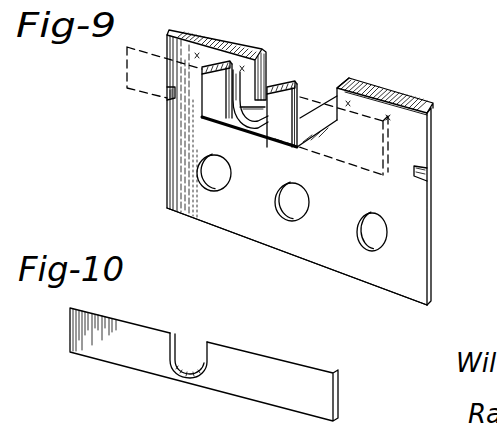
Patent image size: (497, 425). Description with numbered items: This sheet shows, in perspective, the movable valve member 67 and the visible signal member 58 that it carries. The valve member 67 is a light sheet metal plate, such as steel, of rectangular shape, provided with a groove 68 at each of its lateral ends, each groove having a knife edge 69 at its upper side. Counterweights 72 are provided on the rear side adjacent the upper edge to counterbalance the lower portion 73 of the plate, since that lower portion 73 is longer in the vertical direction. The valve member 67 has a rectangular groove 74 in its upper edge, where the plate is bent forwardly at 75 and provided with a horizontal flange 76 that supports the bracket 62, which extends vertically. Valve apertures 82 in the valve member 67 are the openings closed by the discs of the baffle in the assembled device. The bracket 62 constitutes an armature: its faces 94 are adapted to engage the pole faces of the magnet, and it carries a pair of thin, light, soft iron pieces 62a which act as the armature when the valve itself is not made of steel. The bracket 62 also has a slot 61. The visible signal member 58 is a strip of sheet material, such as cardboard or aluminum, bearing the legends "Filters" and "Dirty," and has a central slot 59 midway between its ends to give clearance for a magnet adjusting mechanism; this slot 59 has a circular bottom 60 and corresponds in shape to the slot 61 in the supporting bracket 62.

In FIG. 9, the visible signal member 58 is at (127, 47).
In FIG. 10, the visible signal member 58 is at (143, 330).
In FIG. 10, the central slot 59 is at (177, 338).
In FIG. 10, the circular bottom 60 is at (191, 372).
In FIG. 9, the slot 61 is at (240, 92).
In FIG. 9, the supporting bracket 62 is at (303, 97).
In FIG. 9, the soft iron pieces 62a is at (212, 92).
In FIG. 9, the valve member 67 is at (420, 205).
In FIG. 9, the groove 68 is at (167, 95).
In FIG. 9, the knife edge 69 is at (164, 87).
In FIG. 9, the counterweights 72 is at (236, 20).
In FIG. 9, the lower portion 73 is at (325, 266).
In FIG. 9, the rectangular groove 74 is at (335, 97).
In FIG. 9, the forward bend 75 is at (301, 110).
In FIG. 9, the horizontal flange 76 is at (318, 124).
In FIG. 9, the valve apertures 82 is at (275, 197).
In FIG. 9, the faces 94 is at (216, 64).